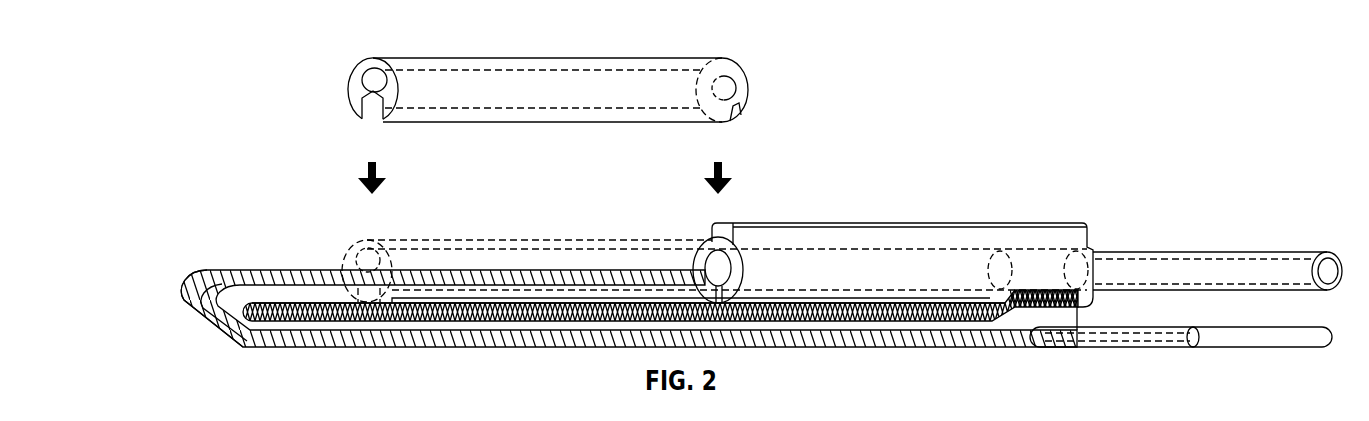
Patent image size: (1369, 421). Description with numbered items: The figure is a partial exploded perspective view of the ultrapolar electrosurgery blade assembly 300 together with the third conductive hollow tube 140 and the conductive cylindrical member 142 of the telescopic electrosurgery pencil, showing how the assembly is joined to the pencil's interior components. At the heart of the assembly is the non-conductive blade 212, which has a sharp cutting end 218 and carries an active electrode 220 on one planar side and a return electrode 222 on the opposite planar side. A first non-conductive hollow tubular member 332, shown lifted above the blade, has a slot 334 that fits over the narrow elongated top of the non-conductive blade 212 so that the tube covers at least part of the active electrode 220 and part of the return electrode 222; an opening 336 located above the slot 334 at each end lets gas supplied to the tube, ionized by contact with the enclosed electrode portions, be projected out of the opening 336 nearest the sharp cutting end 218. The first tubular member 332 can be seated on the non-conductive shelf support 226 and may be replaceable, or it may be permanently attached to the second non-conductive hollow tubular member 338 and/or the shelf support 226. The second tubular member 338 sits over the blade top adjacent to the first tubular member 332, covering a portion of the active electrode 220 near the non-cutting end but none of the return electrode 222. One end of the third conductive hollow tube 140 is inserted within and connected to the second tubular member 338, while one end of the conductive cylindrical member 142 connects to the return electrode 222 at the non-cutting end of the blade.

The ultrapolar electrosurgery blade assembly 300 is at (1022, 176).
The first non-conductive hollow tubular member 332 is at (474, 70).
The slot 334 is at (372, 117).
The opening 336 is at (373, 80).
The second non-conductive hollow tubular member 338 is at (865, 240).
The third conductive hollow tube 140 is at (1167, 258).
The conductive cylindrical member 142 is at (1208, 347).
The non-conductive blade 212 is at (233, 302).
The sharp cutting end 218 is at (176, 292).
The active electrode 220 is at (282, 312).
The return electrode 222 is at (272, 277).
The non-conductive shelf support 226 is at (474, 300).